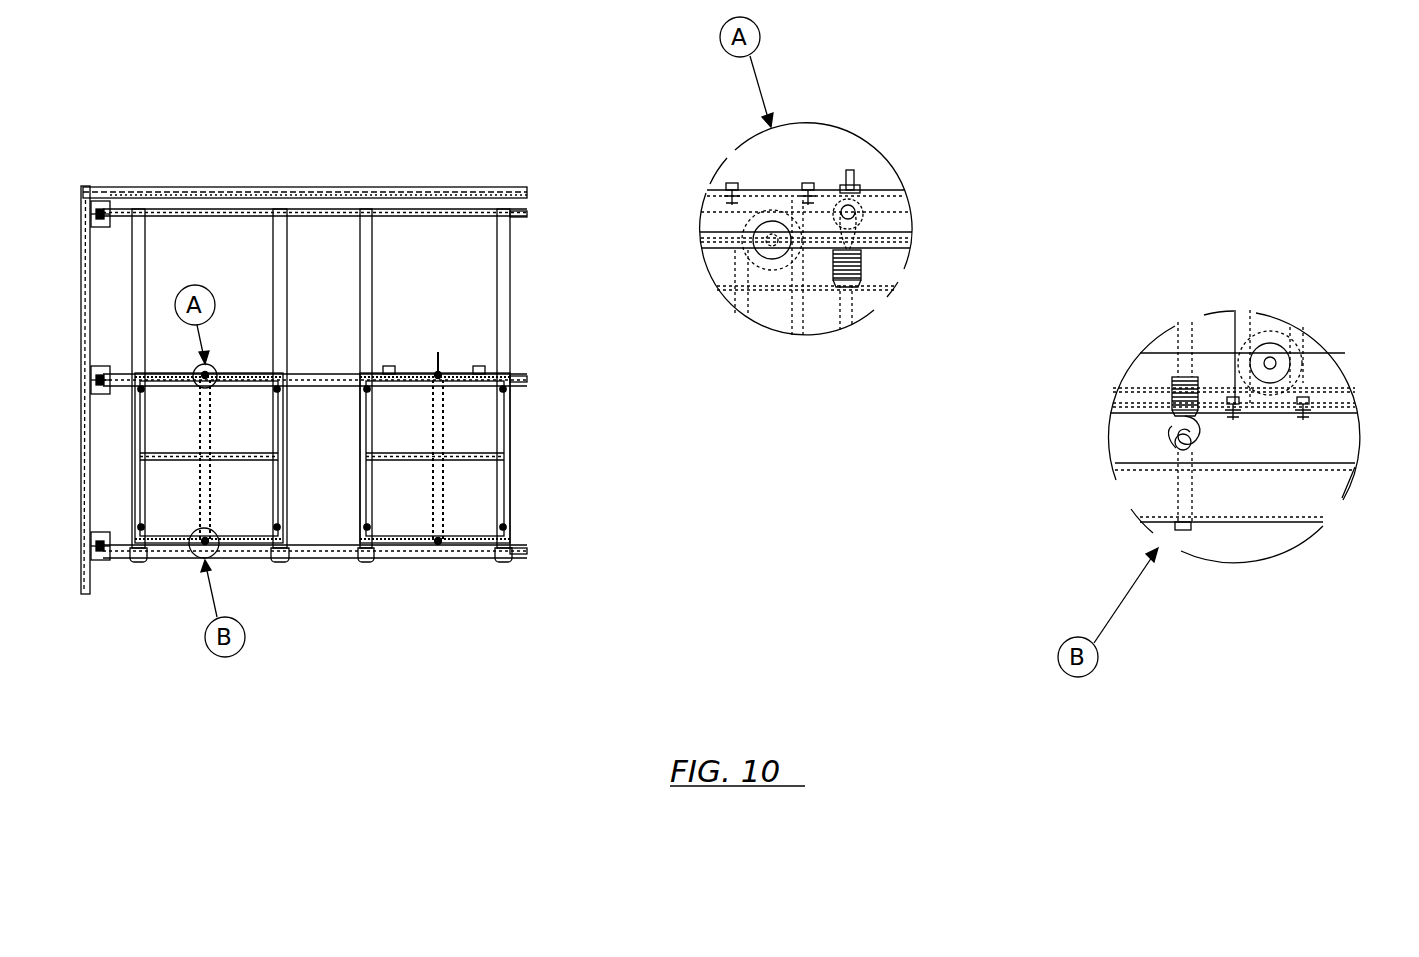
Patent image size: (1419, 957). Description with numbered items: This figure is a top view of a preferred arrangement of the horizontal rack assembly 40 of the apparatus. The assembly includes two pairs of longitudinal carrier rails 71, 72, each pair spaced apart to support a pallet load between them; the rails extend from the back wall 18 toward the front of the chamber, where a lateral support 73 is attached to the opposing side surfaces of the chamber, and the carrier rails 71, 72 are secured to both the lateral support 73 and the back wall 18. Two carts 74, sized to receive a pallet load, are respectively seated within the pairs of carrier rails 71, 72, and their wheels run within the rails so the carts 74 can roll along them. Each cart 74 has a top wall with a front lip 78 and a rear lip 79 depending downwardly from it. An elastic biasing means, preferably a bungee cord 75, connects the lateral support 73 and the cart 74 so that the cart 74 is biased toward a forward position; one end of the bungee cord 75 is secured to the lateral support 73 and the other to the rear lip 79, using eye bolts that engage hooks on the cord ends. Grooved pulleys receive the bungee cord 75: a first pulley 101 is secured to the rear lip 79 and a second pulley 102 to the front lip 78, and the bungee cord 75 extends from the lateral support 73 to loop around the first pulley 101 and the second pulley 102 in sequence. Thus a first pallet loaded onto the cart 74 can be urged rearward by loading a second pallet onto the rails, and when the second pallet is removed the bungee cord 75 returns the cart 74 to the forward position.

The back wall 18 is at (187, 190).
The horizontal rack assembly 40 is at (168, 590).
The longitudinal carrier rails 71 is at (140, 228).
The longitudinal carrier rails 72 is at (364, 222).
The lateral support 73 is at (258, 556).
The carts 74 is at (247, 485).
The bungee cord 75 is at (216, 418).
The front lip 78 is at (1333, 413).
The rear lip 79 is at (886, 200).
The first pulley 101 is at (753, 232).
The second pulley 102 is at (1268, 355).